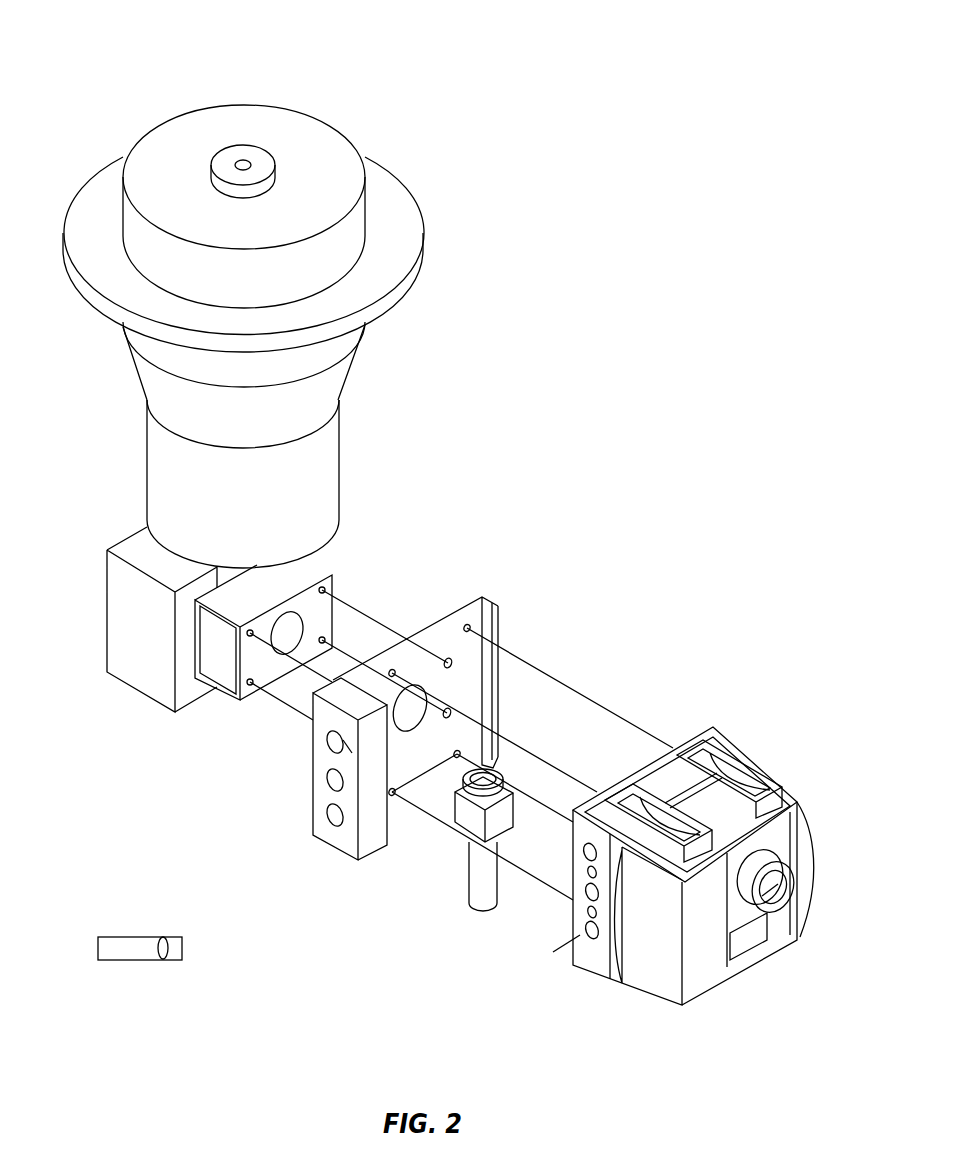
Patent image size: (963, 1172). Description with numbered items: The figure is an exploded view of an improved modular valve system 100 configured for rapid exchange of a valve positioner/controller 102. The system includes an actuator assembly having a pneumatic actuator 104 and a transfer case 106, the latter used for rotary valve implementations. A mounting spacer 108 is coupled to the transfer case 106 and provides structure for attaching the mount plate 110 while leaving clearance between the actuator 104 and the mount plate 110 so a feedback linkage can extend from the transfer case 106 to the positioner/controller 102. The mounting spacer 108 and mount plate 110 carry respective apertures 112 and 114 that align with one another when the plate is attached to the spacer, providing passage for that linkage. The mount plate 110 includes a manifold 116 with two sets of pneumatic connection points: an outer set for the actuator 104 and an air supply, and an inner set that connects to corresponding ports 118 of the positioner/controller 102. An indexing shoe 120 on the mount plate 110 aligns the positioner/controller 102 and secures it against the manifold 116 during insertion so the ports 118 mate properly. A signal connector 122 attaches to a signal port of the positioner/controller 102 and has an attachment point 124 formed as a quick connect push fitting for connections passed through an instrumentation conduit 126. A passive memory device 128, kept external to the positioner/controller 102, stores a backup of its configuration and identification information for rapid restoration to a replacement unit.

The modular valve system 100 is at (158, 63).
The valve positioner/controller 102 is at (710, 874).
The pneumatic actuator 104 is at (395, 245).
The transfer case 106 is at (140, 548).
The mounting spacer 108 is at (321, 616).
The mount plate 110 is at (503, 704).
The aperture 112 is at (415, 702).
The aperture 114 is at (286, 638).
The manifold 116 is at (323, 827).
The ports 118 is at (594, 936).
The indexing shoe 120 is at (492, 629).
The signal connector 122 is at (490, 778).
The attachment point 124 is at (490, 768).
The instrumentation conduit 126 is at (483, 898).
The passive memory device 128 is at (127, 948).